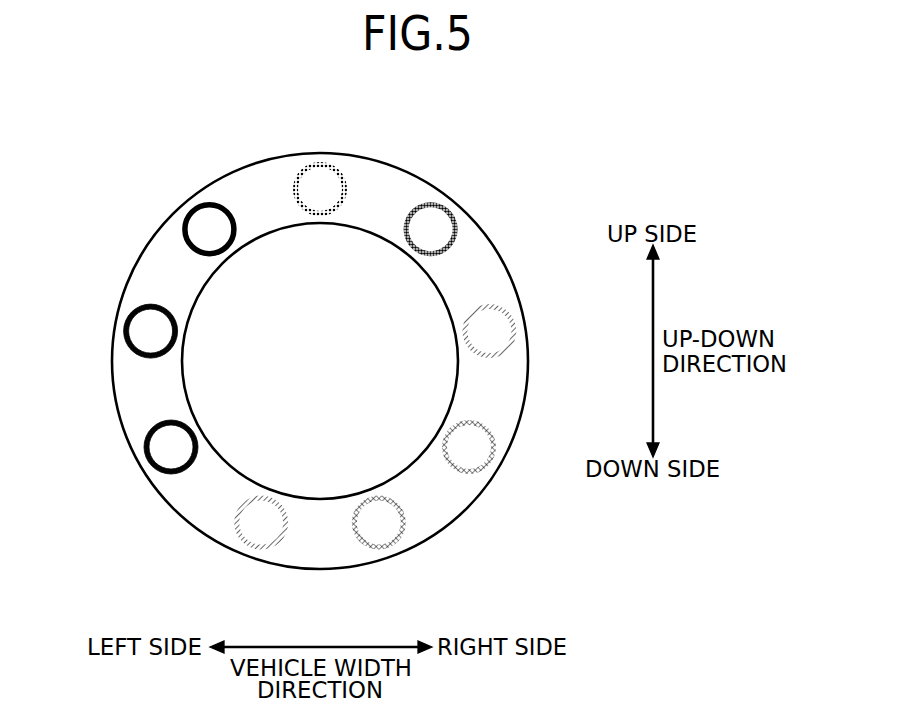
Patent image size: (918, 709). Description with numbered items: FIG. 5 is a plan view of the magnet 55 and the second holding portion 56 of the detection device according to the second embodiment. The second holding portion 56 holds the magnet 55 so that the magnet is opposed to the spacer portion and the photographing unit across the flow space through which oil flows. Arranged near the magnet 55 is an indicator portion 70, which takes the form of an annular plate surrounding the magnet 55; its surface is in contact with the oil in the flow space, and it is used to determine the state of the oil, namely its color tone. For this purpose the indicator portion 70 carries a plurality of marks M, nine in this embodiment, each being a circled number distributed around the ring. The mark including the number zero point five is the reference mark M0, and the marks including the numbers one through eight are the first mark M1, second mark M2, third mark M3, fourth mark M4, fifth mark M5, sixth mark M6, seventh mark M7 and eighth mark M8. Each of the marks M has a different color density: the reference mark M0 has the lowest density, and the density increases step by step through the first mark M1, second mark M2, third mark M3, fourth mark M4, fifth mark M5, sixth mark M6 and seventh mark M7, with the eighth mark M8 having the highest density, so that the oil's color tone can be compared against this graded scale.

The indicator portion 70 is at (329, 361).
The second holding portion 56 is at (505, 263).
The magnet 55 is at (430, 372).
The marks M is at (321, 353).
The reference mark M0 is at (320, 162).
The first mark M1 is at (450, 212).
The second mark M2 is at (518, 328).
The third mark M3 is at (497, 448).
The fourth mark M4 is at (378, 550).
The fifth mark M5 is at (260, 550).
The sixth mark M6 is at (144, 447).
The seventh mark M7 is at (123, 328).
The eighth mark M8 is at (186, 207).